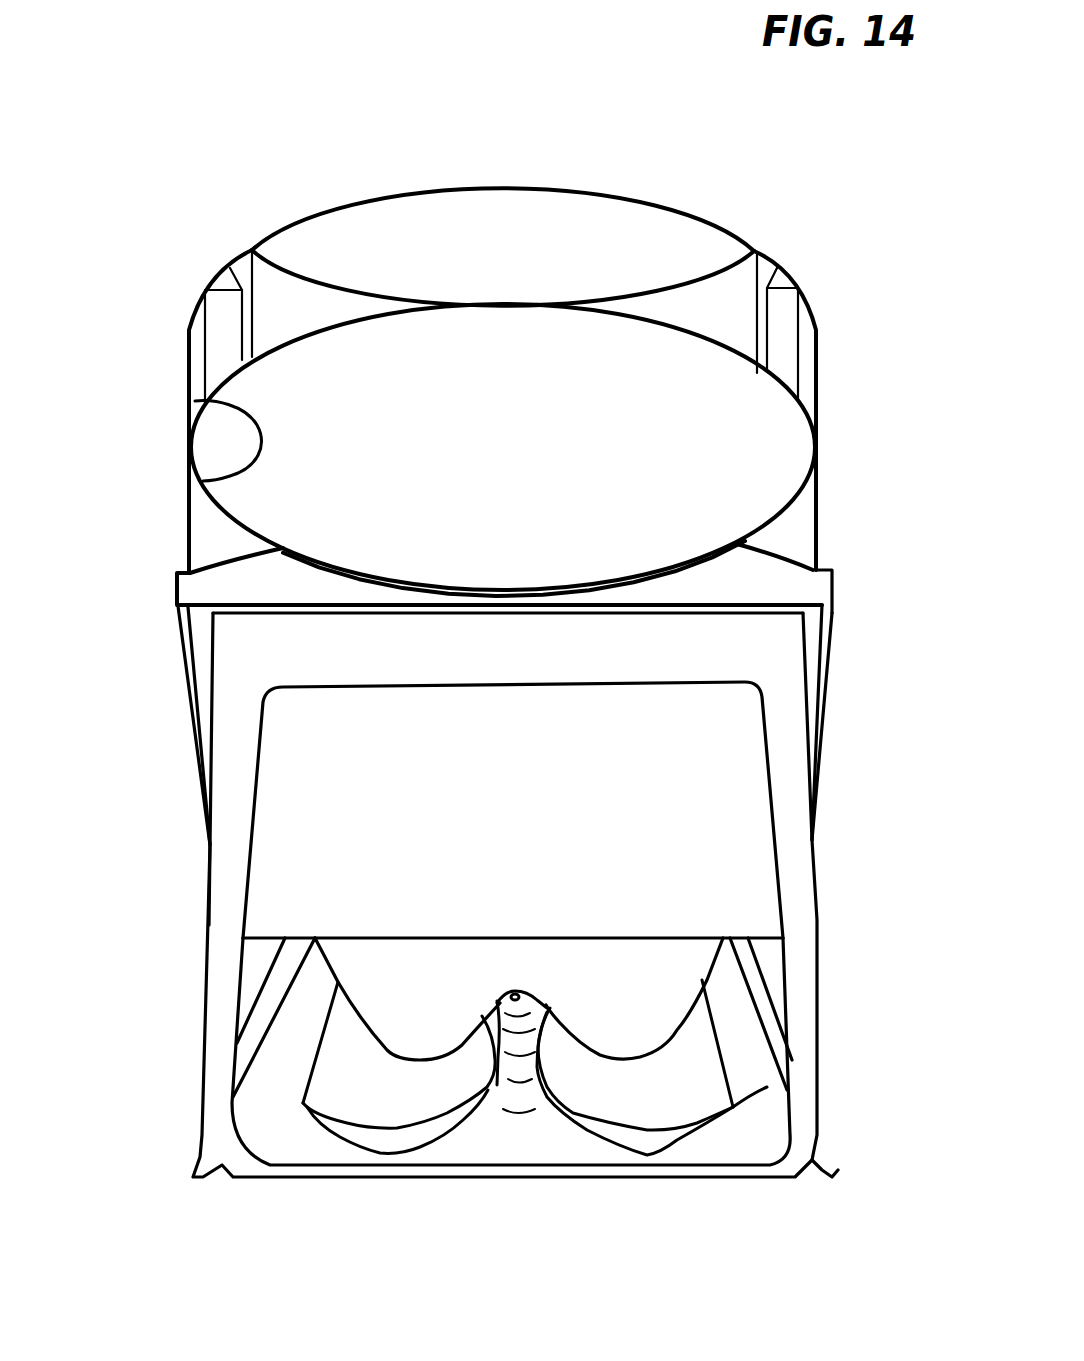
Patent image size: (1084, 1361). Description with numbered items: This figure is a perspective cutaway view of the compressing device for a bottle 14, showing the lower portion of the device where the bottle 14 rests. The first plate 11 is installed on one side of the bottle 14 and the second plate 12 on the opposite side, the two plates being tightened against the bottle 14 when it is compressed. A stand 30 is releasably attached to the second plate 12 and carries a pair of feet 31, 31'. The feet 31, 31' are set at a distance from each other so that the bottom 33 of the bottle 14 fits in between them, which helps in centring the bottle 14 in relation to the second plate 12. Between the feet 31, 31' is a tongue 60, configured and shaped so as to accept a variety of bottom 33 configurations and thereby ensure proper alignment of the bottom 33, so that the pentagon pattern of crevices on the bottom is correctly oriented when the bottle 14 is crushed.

The first plate 11 is at (479, 237).
The bottle 14 is at (190, 402).
The second plate 12 is at (789, 579).
The stand 30 is at (207, 977).
The bottom 33 is at (512, 1017).
The foot 31 is at (350, 1135).
The foot 31' is at (662, 1142).
The tongue 60 is at (520, 1067).